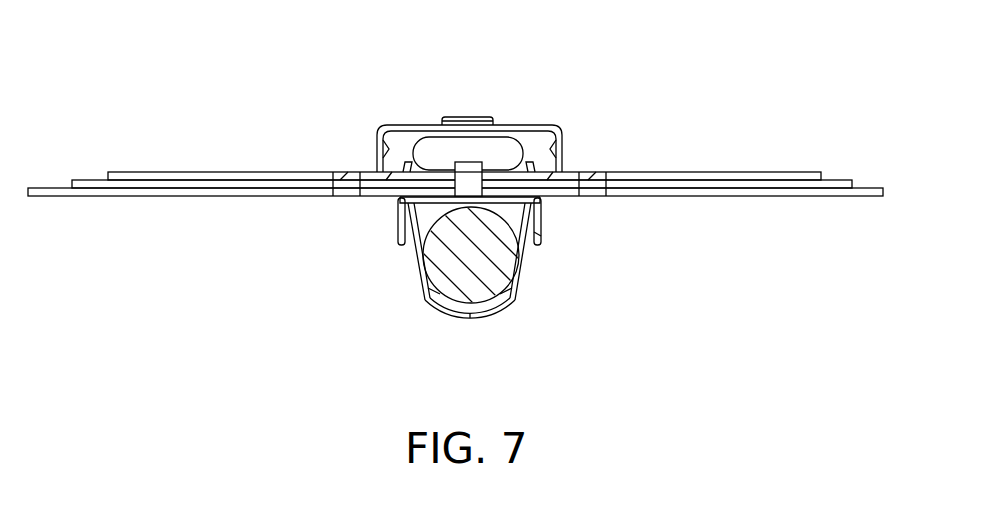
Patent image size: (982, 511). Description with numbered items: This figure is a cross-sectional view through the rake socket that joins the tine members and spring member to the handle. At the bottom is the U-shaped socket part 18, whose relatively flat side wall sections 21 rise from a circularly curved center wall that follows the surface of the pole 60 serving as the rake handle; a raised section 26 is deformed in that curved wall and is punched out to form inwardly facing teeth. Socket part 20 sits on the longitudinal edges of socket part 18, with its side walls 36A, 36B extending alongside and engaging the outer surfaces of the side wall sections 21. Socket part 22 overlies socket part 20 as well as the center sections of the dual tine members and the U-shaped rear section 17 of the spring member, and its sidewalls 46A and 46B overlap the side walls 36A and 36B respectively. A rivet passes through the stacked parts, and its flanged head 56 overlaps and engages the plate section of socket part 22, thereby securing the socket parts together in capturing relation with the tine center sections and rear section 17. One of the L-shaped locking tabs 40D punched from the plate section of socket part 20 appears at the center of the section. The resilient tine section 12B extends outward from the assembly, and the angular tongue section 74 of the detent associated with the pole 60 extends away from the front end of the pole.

The tine section 12B is at (165, 172).
The socket part 22 is at (471, 105).
The flanged head 56 is at (465, 116).
The U-shaped rear section 17 is at (532, 135).
The L-shaped locking tab 40D is at (470, 163).
The sidewall 46A is at (560, 152).
The sidewall 46B is at (378, 156).
The socket part 20 is at (385, 213).
The side wall section 21 is at (413, 277).
The socket part 18 is at (469, 279).
The raised section 26 is at (435, 310).
The side wall 36A is at (542, 223).
The side wall 36B is at (398, 222).
The pole 60 is at (541, 235).
The tongue section 74 is at (472, 305).